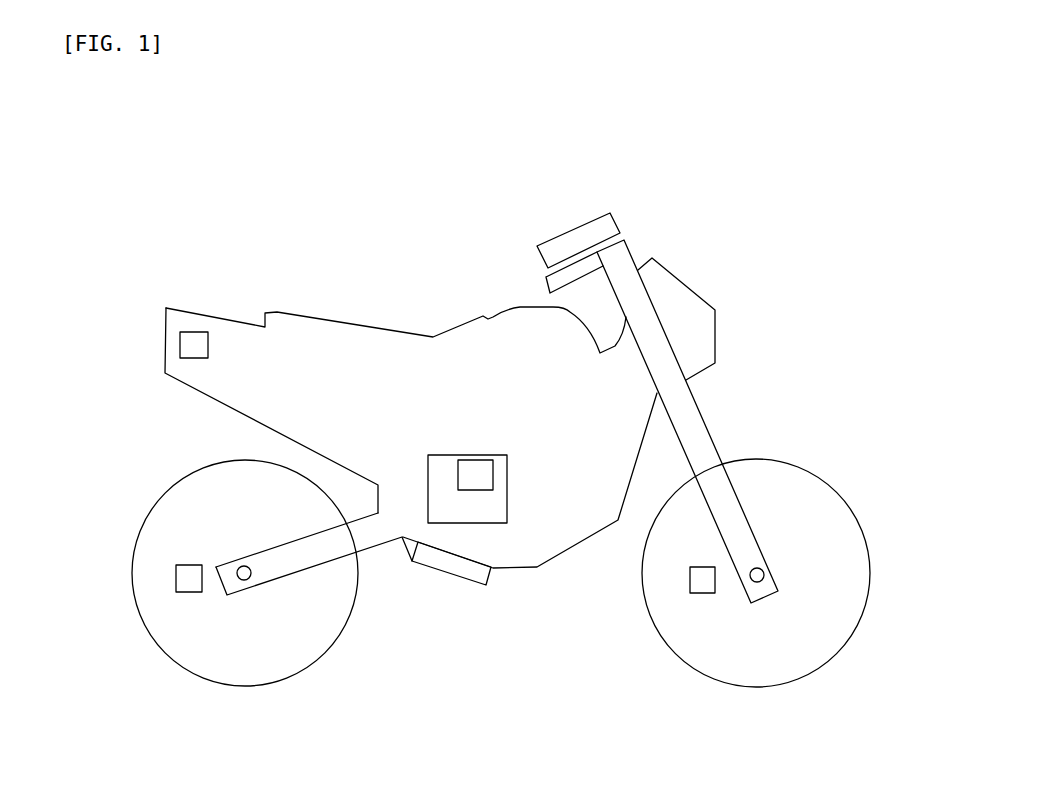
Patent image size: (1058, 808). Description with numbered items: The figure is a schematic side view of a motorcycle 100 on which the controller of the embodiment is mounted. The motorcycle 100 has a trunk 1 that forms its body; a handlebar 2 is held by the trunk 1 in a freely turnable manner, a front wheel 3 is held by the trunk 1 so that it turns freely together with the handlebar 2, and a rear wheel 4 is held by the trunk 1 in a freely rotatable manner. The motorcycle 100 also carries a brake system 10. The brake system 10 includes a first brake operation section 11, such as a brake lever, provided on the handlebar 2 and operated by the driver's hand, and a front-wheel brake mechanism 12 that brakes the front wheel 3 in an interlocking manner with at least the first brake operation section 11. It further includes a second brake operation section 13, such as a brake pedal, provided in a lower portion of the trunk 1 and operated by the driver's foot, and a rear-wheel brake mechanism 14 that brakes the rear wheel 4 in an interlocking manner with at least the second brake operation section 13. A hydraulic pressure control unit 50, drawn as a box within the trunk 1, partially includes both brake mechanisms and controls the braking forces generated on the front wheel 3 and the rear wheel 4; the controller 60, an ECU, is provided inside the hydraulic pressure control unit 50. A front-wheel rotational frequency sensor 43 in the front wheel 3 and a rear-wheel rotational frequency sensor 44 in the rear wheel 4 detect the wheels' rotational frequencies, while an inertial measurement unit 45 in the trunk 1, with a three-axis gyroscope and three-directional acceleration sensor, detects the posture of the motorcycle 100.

The motorcycle 100 is at (814, 83).
The trunk 1 is at (313, 338).
The handlebar 2 is at (552, 250).
The front wheel 3 is at (759, 700).
The rear wheel 4 is at (245, 698).
The brake system 10 is at (744, 383).
The first brake operation section 11 is at (558, 285).
The front-wheel brake mechanism 12 is at (773, 543).
The second brake operation section 13 is at (470, 570).
The rear-wheel brake mechanism 14 is at (224, 553).
The front-wheel rotational frequency sensor 43 is at (688, 580).
The rear-wheel rotational frequency sensor 44 is at (177, 577).
The inertial measurement unit 45 is at (192, 340).
The hydraulic pressure control unit 50 is at (444, 449).
The controller 60 is at (474, 457).